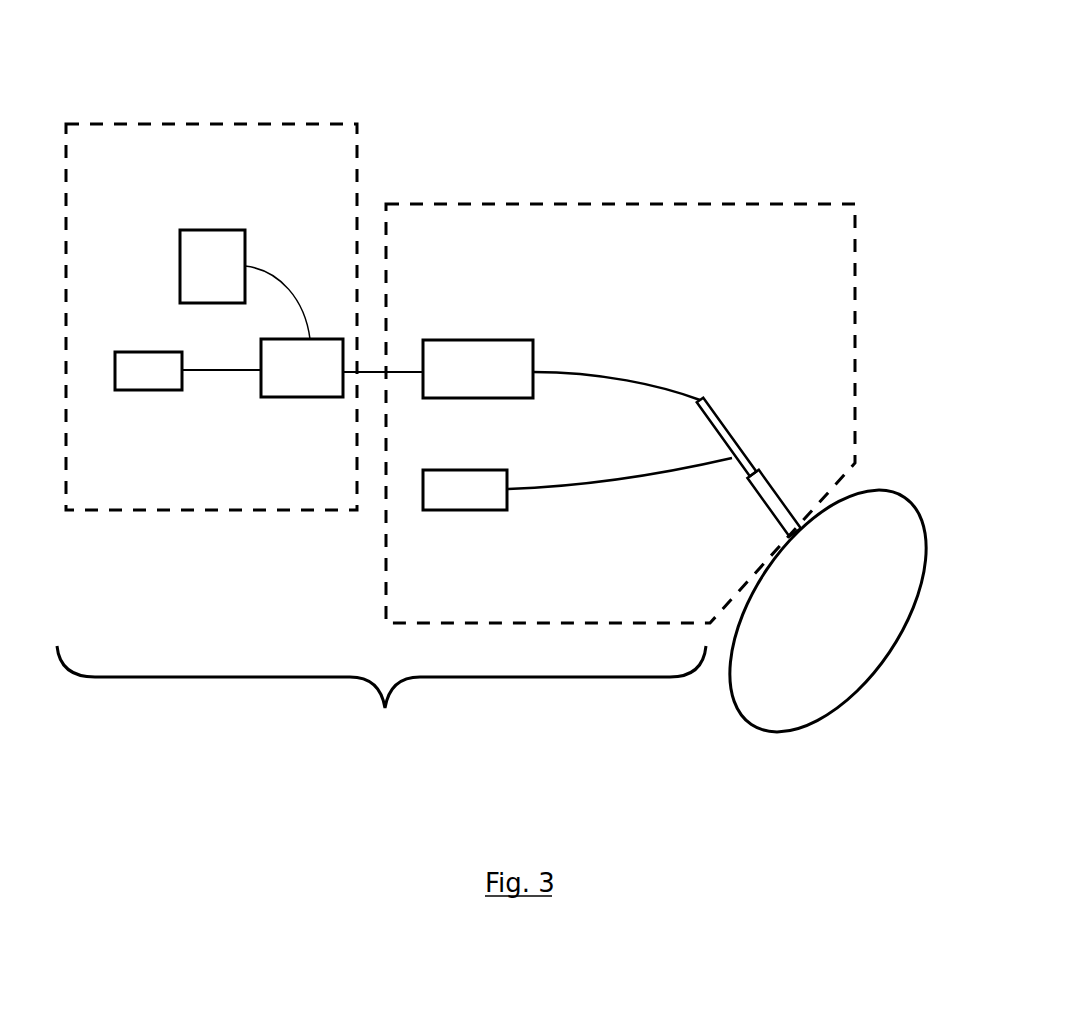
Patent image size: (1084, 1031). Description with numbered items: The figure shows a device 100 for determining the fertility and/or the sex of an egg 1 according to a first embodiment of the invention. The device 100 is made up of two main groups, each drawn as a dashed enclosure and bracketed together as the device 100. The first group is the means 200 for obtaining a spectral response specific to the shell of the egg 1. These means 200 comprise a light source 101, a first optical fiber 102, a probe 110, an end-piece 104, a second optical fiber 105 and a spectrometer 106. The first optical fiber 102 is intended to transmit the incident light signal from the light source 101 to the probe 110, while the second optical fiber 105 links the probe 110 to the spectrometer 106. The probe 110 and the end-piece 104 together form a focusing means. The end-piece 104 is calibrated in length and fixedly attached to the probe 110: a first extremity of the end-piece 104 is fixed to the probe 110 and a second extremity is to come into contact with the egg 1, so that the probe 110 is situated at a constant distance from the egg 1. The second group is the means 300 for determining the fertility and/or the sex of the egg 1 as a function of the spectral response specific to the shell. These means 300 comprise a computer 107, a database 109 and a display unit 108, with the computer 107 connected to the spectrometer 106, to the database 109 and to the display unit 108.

The egg 1 is at (885, 515).
The device 100 is at (381, 699).
The light source 101 is at (470, 497).
The first optical fiber 102 is at (613, 485).
The end-piece 104 is at (768, 502).
The second optical fiber 105 is at (612, 380).
The spectrometer 106 is at (470, 360).
The computer 107 is at (307, 388).
The display unit 108 is at (165, 382).
The database 109 is at (207, 247).
The probe 110 is at (726, 428).
The means for obtaining a spectral response 200 is at (655, 203).
The means for determining fertility and/or sex 300 is at (210, 125).